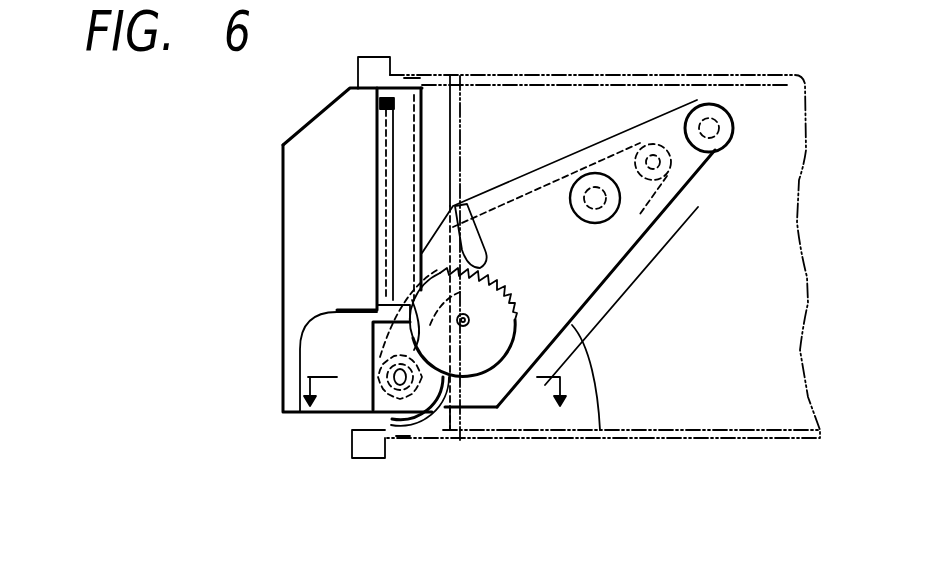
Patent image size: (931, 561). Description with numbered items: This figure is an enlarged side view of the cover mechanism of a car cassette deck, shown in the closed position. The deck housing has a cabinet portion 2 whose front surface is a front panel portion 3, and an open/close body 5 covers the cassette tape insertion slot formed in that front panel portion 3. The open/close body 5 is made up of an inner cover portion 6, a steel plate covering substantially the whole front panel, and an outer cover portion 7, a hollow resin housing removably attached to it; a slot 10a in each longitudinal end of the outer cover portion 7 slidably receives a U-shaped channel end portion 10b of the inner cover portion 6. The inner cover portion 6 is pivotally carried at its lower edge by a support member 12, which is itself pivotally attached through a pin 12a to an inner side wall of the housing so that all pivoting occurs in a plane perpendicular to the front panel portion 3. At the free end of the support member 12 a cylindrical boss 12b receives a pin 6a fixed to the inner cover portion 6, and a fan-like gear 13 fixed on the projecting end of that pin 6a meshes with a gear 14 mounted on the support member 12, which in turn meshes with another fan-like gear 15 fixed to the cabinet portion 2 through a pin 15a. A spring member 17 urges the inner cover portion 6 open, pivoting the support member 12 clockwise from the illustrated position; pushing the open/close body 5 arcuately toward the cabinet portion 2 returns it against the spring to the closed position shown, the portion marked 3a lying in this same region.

The cabinet portion 2 is at (785, 76).
The front panel portion 3 is at (462, 80).
The pivot bearing portion 3a is at (410, 77).
The open/close body 5 is at (297, 122).
The inner cover portion 6 is at (452, 114).
The pin 6a is at (372, 436).
The outer cover portion 7 is at (347, 106).
The slot 10a is at (370, 114).
The U-shaped channel end portion 10b is at (385, 88).
The support member 12 is at (604, 432).
The pin 12a is at (655, 156).
The cylindrical boss 12b is at (385, 378).
The fan-like gear 13 is at (432, 428).
The gear 14 is at (500, 383).
The fan-like gear 15 is at (563, 158).
The pin 15a is at (600, 192).
The spring member 17 is at (475, 300).